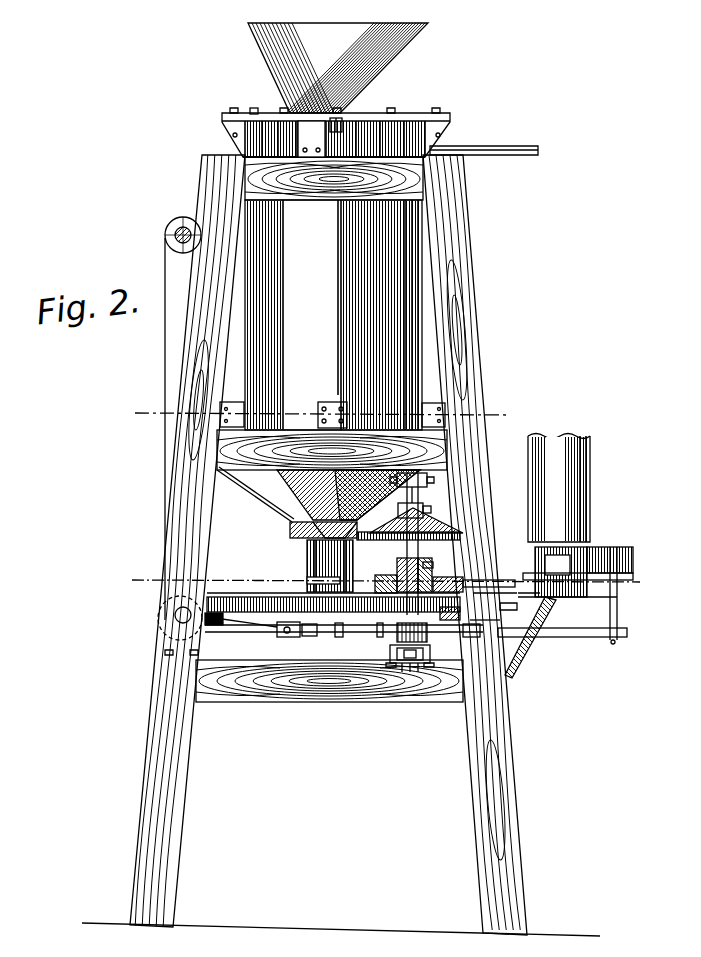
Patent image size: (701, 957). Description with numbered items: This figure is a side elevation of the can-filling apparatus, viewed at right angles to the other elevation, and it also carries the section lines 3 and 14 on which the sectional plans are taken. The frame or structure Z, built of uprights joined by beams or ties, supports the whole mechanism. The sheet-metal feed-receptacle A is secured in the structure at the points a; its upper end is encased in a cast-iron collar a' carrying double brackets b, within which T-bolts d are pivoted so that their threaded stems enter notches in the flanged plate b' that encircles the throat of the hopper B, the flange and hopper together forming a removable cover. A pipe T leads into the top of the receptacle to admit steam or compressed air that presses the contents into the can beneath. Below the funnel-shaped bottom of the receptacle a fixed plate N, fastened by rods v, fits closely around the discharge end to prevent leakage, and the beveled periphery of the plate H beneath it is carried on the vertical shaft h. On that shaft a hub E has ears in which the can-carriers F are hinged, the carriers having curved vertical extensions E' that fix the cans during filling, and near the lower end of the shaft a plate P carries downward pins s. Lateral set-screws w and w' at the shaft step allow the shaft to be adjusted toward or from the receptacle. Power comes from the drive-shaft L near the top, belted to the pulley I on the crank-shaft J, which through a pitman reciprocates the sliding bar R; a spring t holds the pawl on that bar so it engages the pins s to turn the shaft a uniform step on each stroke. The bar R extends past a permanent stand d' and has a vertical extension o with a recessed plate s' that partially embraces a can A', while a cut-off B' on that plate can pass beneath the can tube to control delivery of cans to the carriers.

The hopper B is at (338, 68).
The double brackets b is at (331, 132).
The flanged plate b' is at (252, 100).
The T-bolts d is at (327, 110).
The cast-iron collar a' is at (311, 139).
The pipe T is at (523, 148).
The drive-shaft L is at (164, 233).
The frame or structure Z is at (200, 351).
The feed-receptacle A is at (333, 315).
The section line 3 3 is at (320, 416).
The securing points a is at (332, 415).
The spring t is at (255, 494).
The plate N is at (290, 531).
The can A' is at (429, 568).
The vertical shaft h is at (407, 549).
The vertical extensions E' is at (393, 575).
The hub E is at (466, 589).
The plate H is at (430, 532).
The can-carriers F is at (293, 593).
The section line 14 14 is at (386, 581).
The pulley I is at (170, 636).
The crank-shaft J is at (455, 728).
The bar R is at (310, 636).
The pins s is at (299, 641).
The plate P is at (360, 637).
The recessed plate s' is at (522, 615).
The set-screw w' is at (392, 658).
The set-screw w is at (421, 645).
The rods v is at (390, 692).
The guide piece v' is at (411, 697).
The receiving cylinder C is at (559, 488).
The cut-off B' is at (600, 559).
The vertical extension o is at (618, 604).
The permanent stand d' is at (545, 635).